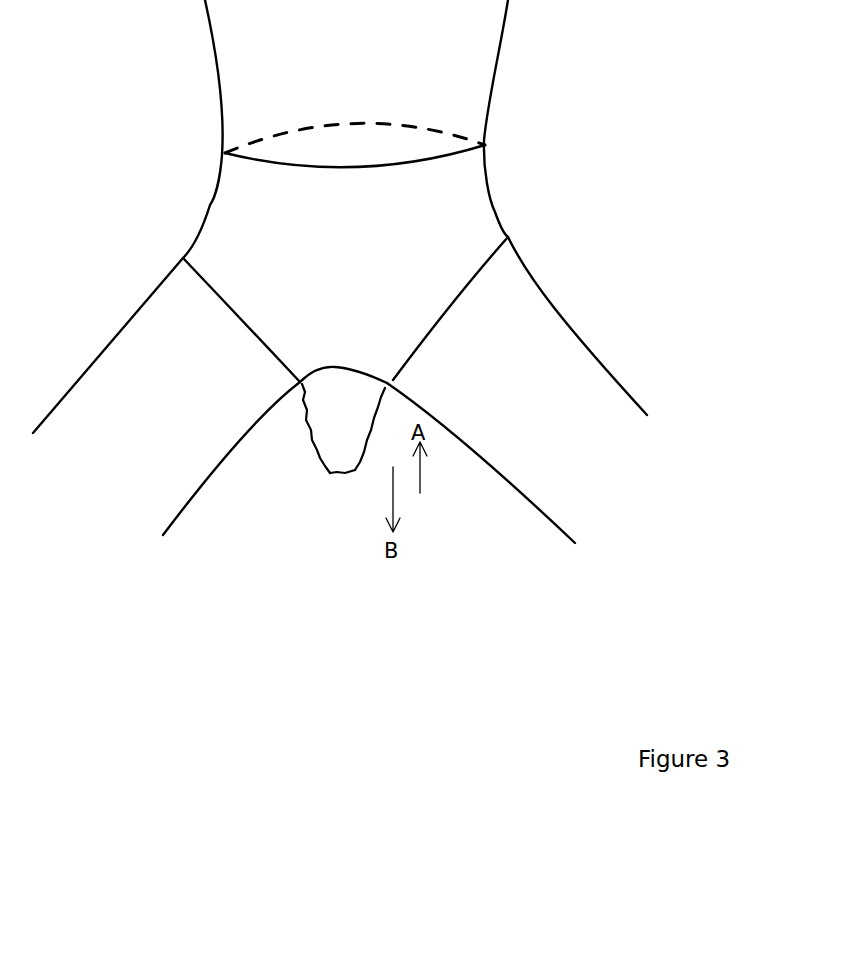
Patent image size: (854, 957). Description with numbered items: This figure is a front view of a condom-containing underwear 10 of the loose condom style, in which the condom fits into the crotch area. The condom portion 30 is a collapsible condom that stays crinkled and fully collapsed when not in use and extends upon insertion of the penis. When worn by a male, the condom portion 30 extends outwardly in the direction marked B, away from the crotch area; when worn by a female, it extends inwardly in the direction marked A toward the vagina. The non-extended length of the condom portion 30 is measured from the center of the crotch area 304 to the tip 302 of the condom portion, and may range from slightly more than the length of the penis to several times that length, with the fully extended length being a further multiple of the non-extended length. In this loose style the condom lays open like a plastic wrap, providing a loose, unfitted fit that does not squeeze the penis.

The garment body 10 is at (473, 185).
The condom portion 30 is at (343, 428).
The center of the crotch area 304 is at (343, 360).
The tip of the condom portion 302 is at (349, 490).